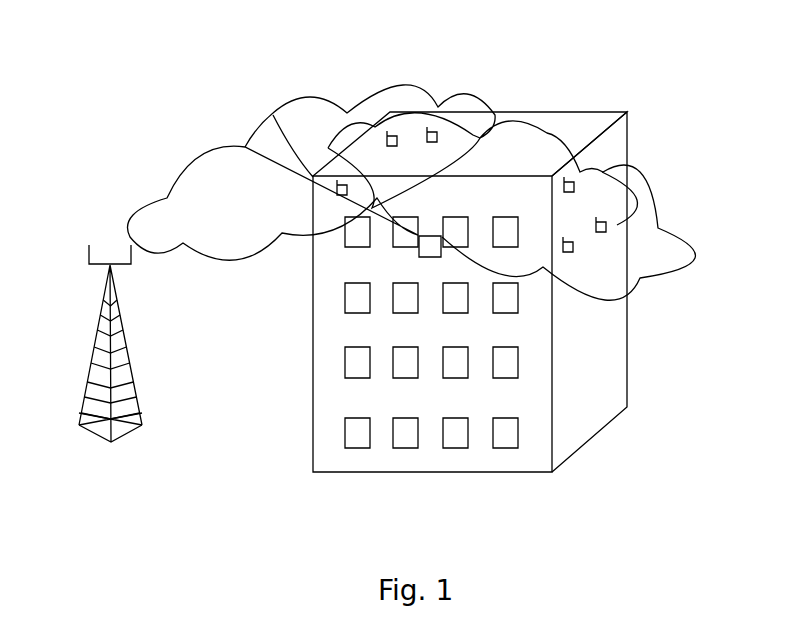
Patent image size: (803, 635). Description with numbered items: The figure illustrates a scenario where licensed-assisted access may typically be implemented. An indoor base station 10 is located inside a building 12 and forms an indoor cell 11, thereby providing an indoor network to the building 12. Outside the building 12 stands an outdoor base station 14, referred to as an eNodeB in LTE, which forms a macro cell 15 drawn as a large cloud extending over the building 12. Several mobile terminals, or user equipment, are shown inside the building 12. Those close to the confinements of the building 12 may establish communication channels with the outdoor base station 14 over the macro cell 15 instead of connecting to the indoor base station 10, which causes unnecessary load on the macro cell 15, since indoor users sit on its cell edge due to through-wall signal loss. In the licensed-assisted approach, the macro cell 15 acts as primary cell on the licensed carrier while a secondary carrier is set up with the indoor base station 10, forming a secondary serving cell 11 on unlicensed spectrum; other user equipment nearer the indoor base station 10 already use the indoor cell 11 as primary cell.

The base station 10 is at (420, 253).
The indoor cell 11 is at (475, 272).
The building 12 is at (580, 425).
The outdoor base station 14 is at (92, 355).
The macro cell 15 is at (183, 177).